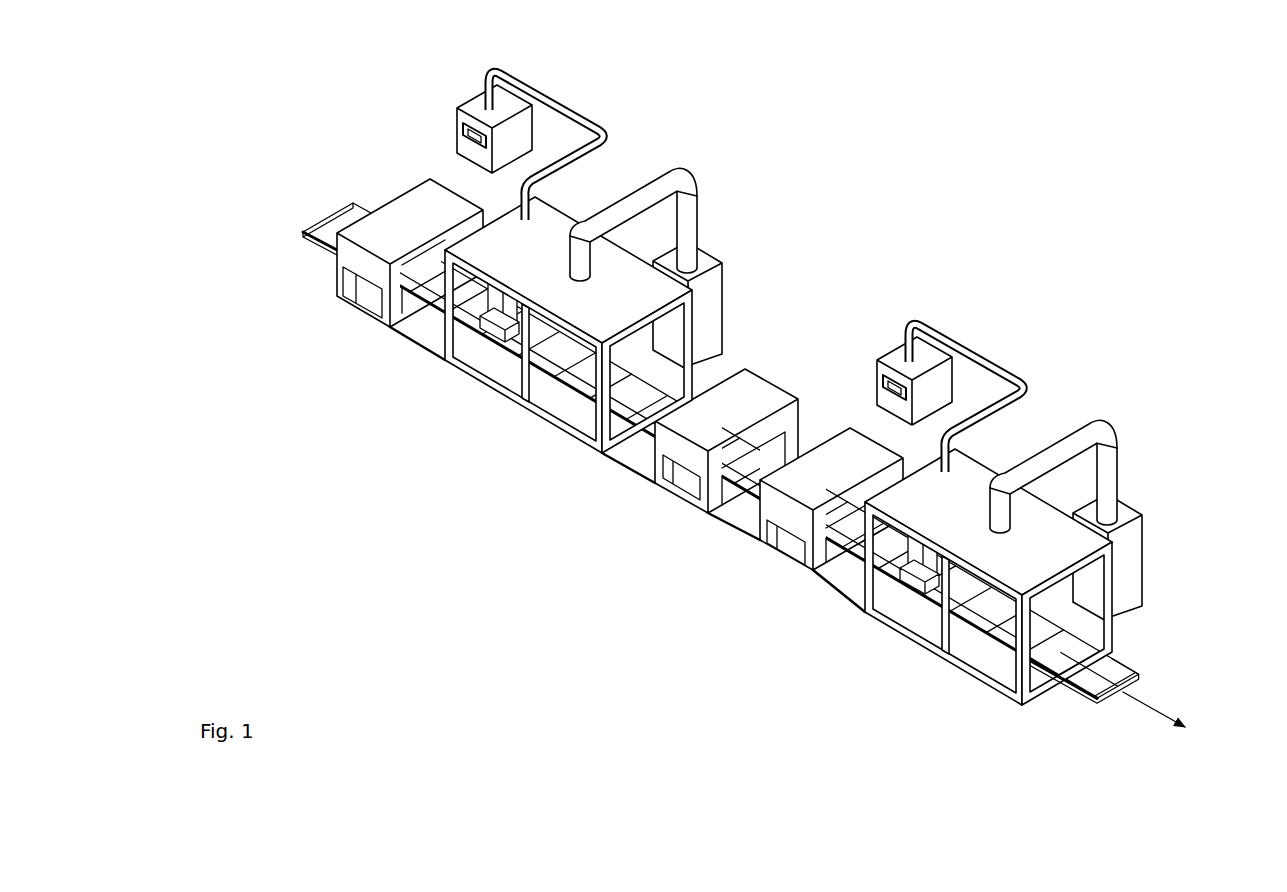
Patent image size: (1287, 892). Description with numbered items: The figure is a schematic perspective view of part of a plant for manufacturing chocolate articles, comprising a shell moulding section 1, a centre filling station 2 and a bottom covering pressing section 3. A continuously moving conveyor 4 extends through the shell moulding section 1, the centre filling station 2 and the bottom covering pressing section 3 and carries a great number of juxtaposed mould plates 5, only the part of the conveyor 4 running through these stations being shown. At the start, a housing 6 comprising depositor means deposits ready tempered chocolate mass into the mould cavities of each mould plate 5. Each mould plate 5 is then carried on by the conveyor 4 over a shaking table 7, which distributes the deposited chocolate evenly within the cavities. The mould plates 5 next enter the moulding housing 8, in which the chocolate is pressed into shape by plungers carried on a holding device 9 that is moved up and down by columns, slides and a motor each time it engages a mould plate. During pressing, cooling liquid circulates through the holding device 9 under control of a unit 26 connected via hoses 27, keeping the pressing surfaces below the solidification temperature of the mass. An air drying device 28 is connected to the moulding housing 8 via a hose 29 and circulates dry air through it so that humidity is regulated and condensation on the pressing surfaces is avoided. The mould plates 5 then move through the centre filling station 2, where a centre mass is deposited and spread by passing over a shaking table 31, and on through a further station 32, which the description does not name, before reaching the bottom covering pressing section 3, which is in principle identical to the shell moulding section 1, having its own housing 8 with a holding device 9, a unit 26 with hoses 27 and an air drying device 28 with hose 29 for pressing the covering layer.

The shell moulding section 1 is at (745, 97).
The centre filling station 2 is at (810, 384).
The bottom covering pressing section 3 is at (1186, 260).
The conveyor 4 is at (305, 236).
The mould plates 5 is at (1080, 665).
The housing 6 is at (365, 263).
The shaking table 7 is at (438, 328).
The moulding housing 8 is at (597, 317).
The holding device 9 is at (488, 340).
The unit 26 is at (517, 133).
The hoses 27 is at (577, 132).
The air drying device 28 is at (705, 262).
The hose 29 is at (650, 197).
The shaking table 31 is at (753, 507).
The processing station 32 is at (808, 520).